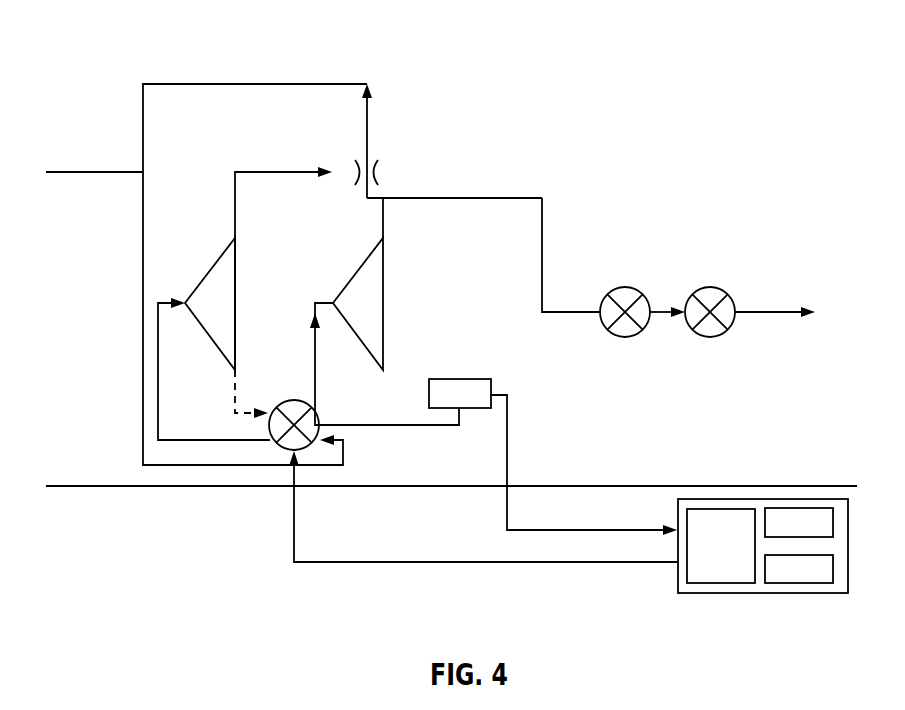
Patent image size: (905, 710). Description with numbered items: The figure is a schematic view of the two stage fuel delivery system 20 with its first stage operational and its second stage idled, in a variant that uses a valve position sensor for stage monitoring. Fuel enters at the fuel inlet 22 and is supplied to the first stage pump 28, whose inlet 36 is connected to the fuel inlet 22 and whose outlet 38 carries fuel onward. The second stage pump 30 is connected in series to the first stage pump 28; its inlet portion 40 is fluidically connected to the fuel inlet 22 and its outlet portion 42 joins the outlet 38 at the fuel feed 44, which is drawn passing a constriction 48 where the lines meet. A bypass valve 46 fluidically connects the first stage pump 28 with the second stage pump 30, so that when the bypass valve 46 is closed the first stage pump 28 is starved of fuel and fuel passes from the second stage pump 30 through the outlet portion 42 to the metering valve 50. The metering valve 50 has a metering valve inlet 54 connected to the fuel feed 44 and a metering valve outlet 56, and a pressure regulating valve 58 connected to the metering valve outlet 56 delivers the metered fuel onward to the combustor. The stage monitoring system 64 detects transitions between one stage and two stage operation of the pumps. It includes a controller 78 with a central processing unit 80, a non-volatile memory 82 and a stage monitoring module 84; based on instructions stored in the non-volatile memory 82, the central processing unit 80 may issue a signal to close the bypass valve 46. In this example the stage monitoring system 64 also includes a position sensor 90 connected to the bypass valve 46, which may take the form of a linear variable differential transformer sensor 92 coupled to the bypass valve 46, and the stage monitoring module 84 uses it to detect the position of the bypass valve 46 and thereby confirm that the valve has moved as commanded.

The two stage fuel delivery system 20 is at (198, 58).
The fuel inlet 22 is at (70, 175).
The first stage pump 28 is at (222, 340).
The second stage pump 30 is at (364, 298).
The inlet 36 is at (158, 388).
The outlet 38 is at (236, 190).
The inlet portion 40 is at (318, 385).
The outlet portion 42 is at (384, 212).
The fuel feed 44 is at (455, 198).
The bypass valve 46 is at (285, 444).
The flow restriction 48 is at (376, 178).
The metering valve 50 is at (618, 295).
The metering valve inlet 54 is at (546, 316).
The metering valve outlet 56 is at (662, 306).
The pressure regulating valve 58 is at (718, 295).
The stage monitoring system 64 is at (531, 545).
The controller 78 is at (668, 586).
The central processing unit 80 is at (713, 568).
The non-volatile memory 82 is at (828, 511).
The stage monitoring module 84 is at (816, 568).
The position sensor 90 is at (461, 370).
The linear variable differential transformer sensor 92 is at (466, 402).